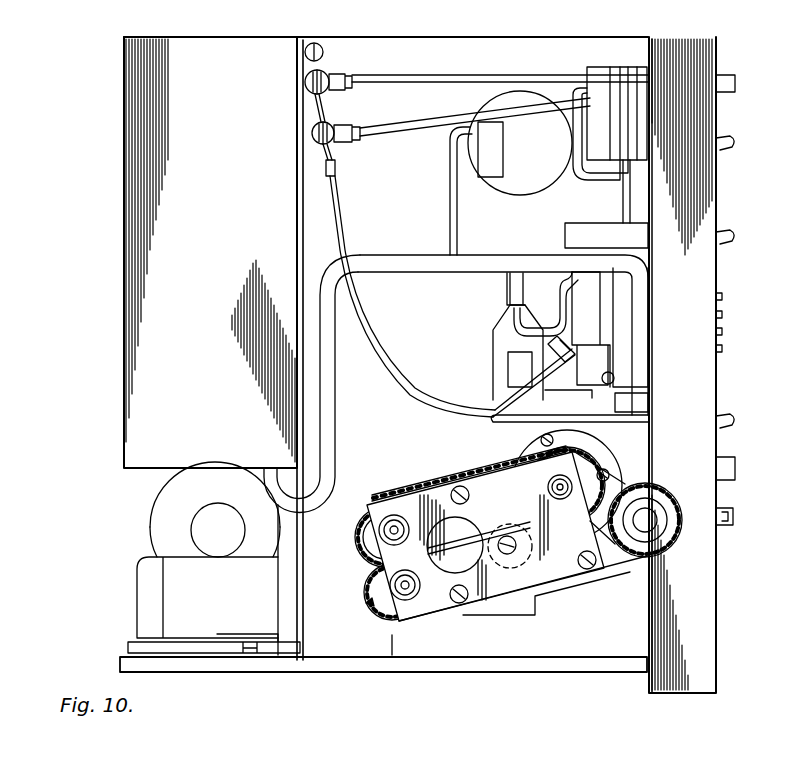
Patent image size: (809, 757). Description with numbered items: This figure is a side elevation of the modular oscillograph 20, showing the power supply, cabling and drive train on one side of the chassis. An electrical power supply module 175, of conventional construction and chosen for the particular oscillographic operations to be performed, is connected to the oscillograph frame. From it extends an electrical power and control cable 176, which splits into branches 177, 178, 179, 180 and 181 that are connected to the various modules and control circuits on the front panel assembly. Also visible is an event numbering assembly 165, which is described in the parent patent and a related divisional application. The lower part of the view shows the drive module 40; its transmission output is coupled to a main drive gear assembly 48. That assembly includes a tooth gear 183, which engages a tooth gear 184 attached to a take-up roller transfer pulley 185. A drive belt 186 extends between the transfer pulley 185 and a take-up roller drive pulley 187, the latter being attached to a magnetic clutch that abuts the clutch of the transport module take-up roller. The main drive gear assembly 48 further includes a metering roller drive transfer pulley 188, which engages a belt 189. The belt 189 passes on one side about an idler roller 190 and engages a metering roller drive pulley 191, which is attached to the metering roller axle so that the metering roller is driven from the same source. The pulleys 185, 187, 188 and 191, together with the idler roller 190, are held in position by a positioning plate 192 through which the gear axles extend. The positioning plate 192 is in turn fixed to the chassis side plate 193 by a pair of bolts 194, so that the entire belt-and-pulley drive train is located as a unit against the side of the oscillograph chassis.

The machine housing 20 is at (97, 250).
The drive module 40 is at (132, 522).
The main drive gear assembly 48 is at (368, 605).
The event numbering assembly 165 is at (523, 120).
The electrical power supply module 175 is at (170, 181).
The electrical power and control cable 176 is at (272, 478).
The branch 177 is at (446, 187).
The branch 178 is at (545, 257).
The branch 179 is at (510, 290).
The branch 180 is at (500, 332).
The branch 181 is at (493, 355).
The tooth gear 183 is at (372, 582).
The tooth gear 184 is at (363, 545).
The take-up roller transfer pulley 185 is at (368, 528).
The drive belt 186 is at (440, 487).
The take-up roller drive pulley 187 is at (583, 487).
The metering roller drive transfer pulley 188 is at (392, 622).
The belt 189 is at (612, 563).
The idler roller 190 is at (522, 515).
The metering roller drive pulley 191 is at (648, 540).
The positioning plate 192 is at (555, 583).
The chassis side plate 193 is at (456, 58).
The bolts 194 is at (470, 500).